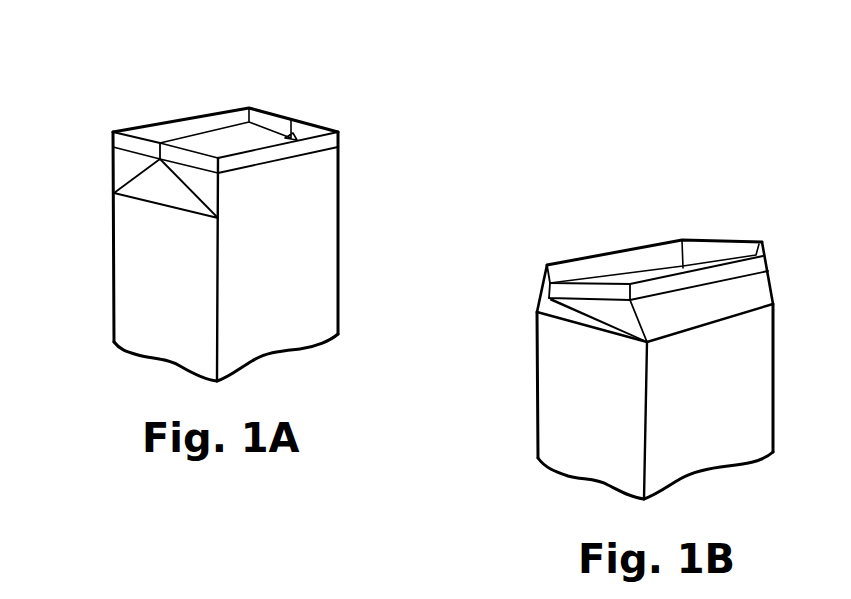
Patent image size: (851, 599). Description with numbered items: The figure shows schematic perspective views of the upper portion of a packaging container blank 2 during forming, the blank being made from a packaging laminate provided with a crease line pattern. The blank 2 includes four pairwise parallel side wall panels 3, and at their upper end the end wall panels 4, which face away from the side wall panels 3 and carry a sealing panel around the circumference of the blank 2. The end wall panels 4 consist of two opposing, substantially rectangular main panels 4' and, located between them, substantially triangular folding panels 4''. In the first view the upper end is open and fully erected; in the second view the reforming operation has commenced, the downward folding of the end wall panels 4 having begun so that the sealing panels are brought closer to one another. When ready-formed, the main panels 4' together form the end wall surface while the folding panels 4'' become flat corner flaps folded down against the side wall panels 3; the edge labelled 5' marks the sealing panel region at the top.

In FIG. 1A, the packaging container blank 2 is at (365, 253).
In FIG. 1B, the packaging container blank 2 is at (516, 408).
In FIG. 1A, the side wall panels 3 is at (172, 294).
In FIG. 1B, the side wall panels 3 is at (599, 414).
In FIG. 1A, the end wall panels 4 is at (219, 120).
In FIG. 1B, the end wall panels 4 is at (683, 244).
In FIG. 1A, the rectangular end wall panels 4' is at (266, 147).
In FIG. 1B, the rectangular end wall panels 4' is at (688, 273).
In FIG. 1A, the triangular end wall panels 4'' is at (118, 188).
In FIG. 1B, the triangular end wall panels 4'' is at (598, 320).
In FIG. 1A, the top edge of collar 5' is at (253, 77).
In FIG. 1B, the top edge of collar 5' is at (654, 205).